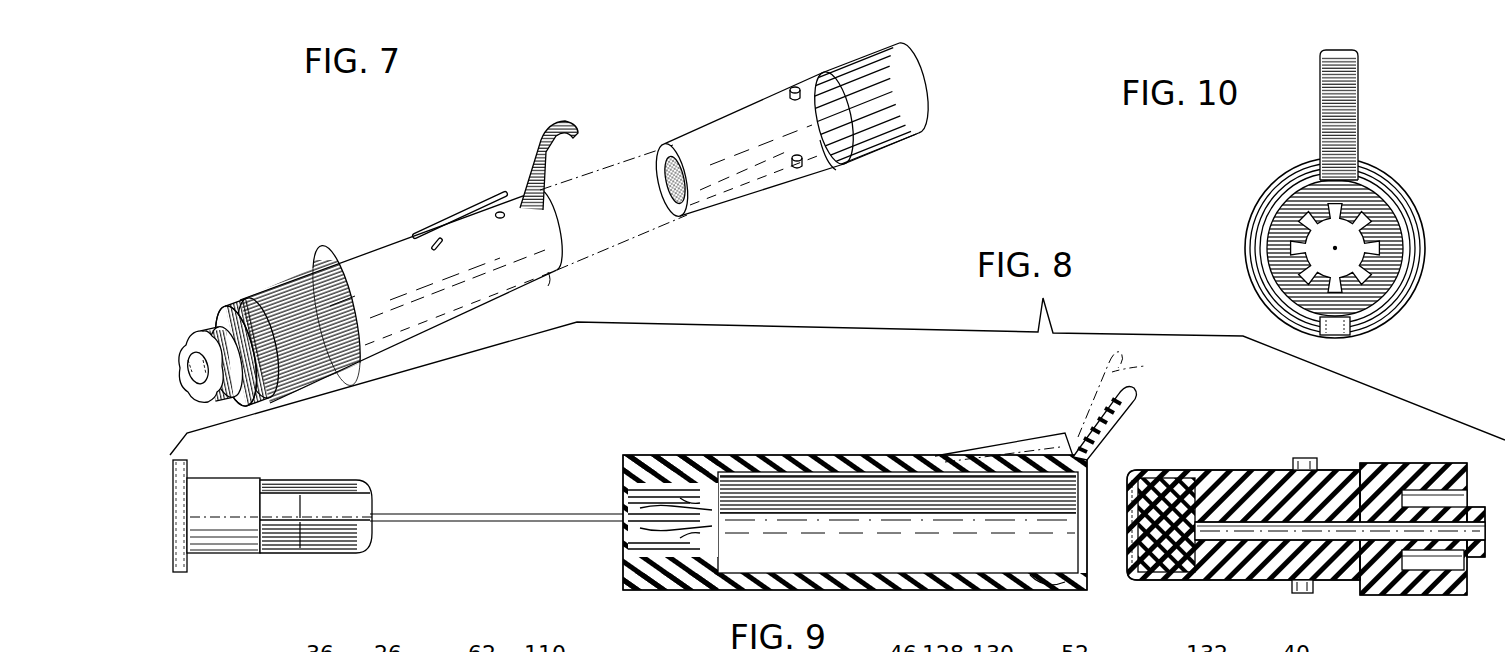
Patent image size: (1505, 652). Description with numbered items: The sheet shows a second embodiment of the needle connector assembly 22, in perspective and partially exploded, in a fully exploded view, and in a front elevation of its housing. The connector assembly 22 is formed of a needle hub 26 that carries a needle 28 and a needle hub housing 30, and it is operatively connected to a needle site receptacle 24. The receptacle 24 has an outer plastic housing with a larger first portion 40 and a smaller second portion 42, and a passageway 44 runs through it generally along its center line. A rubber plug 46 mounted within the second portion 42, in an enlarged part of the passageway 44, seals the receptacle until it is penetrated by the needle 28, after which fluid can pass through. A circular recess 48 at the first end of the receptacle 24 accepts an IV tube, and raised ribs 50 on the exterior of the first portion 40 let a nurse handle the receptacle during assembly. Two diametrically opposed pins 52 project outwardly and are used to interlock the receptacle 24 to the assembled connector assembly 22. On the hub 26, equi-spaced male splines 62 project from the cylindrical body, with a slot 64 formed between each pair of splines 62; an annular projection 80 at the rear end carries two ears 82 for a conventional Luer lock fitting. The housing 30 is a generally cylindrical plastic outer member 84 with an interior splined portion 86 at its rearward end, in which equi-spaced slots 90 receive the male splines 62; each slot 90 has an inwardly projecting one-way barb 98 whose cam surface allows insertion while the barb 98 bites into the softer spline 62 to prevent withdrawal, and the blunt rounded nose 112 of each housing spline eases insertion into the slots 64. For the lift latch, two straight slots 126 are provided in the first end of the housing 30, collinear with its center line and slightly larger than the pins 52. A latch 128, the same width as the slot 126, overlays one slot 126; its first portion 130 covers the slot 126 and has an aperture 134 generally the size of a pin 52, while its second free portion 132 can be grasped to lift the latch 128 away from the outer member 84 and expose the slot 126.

In FIG. 7, the needle connector assembly 22 is at (344, 246).
In FIG. 7, the needle site receptacle 24 is at (835, 178).
In FIG. 8, the needle site receptacle 24 is at (1240, 478).
In FIG. 7, the needle hub 26 is at (242, 337).
In FIG. 8, the needle hub 26 is at (240, 493).
In FIG. 8, the needle 28 is at (503, 514).
In FIG. 8, the needle hub housing 30 is at (805, 455).
In FIG. 7, the first portion 40 is at (900, 140).
In FIG. 8, the first portion 40 is at (1420, 462).
In FIG. 7, the second portion 42 is at (688, 143).
In FIG. 8, the second portion 42 is at (1245, 566).
In FIG. 8, the passageway 44 is at (1483, 558).
In FIG. 7, the rubber plug 46 is at (664, 200).
In FIG. 8, the rubber plug 46 is at (1165, 478).
In FIG. 8, the circular recess 48 is at (1440, 560).
In FIG. 7, the raised ribs 50 is at (912, 78).
In FIG. 7, the pins 52 is at (790, 88).
In FIG. 8, the pins 52 is at (1302, 457).
In FIG. 8, the male splines 62 is at (358, 513).
In FIG. 8, the slot 64 is at (325, 498).
In FIG. 7, the annular projection 80 is at (208, 324).
In FIG. 8, the annular projection 80 is at (182, 572).
In FIG. 7, the ears 82 is at (182, 352).
In FIG. 10, the outer member 84 is at (1400, 190).
In FIG. 8, the splined portion 86 is at (668, 485).
In FIG. 10, the slots 90 is at (1287, 244).
In FIG. 10, the one-way barb 98 is at (1385, 278).
In FIG. 8, the nose 112 is at (640, 540).
In FIG. 7, the straight slots 126 is at (558, 270).
In FIG. 10, the straight slots 126 is at (1362, 330).
In FIG. 8, the straight slots 126 is at (1050, 576).
In FIG. 7, the latch 128 is at (455, 230).
In FIG. 7, the first portion 130 is at (437, 252).
In FIG. 8, the first portion 130 is at (978, 443).
In FIG. 7, the second free portion 132 is at (573, 148).
In FIG. 10, the second free portion 132 is at (1347, 118).
In FIG. 8, the second free portion 132 is at (1140, 410).
In FIG. 7, the aperture 134 is at (499, 211).
In FIG. 8, the aperture 134 is at (1032, 438).